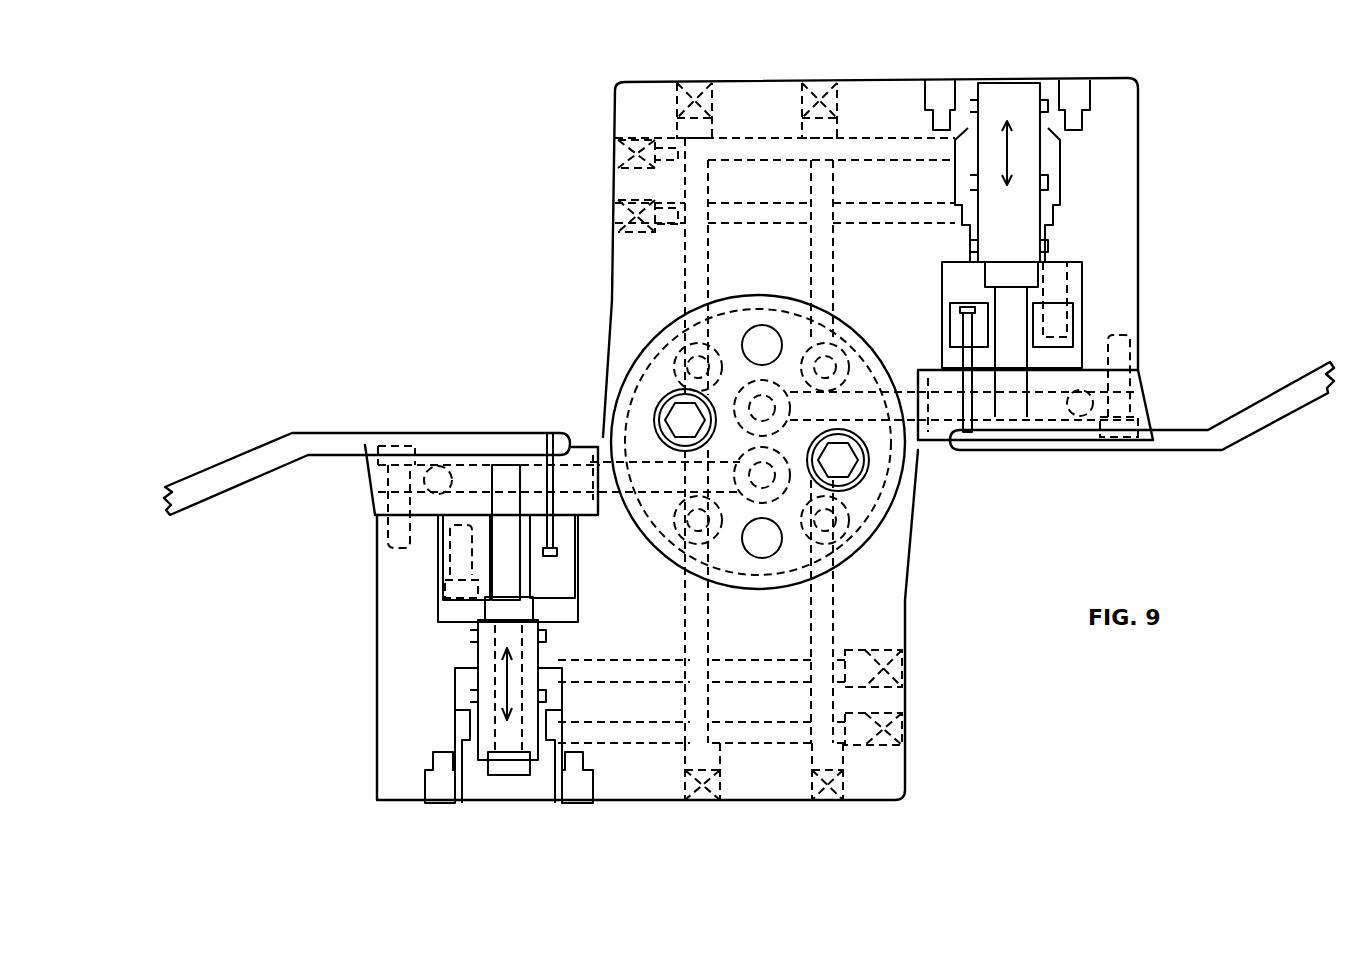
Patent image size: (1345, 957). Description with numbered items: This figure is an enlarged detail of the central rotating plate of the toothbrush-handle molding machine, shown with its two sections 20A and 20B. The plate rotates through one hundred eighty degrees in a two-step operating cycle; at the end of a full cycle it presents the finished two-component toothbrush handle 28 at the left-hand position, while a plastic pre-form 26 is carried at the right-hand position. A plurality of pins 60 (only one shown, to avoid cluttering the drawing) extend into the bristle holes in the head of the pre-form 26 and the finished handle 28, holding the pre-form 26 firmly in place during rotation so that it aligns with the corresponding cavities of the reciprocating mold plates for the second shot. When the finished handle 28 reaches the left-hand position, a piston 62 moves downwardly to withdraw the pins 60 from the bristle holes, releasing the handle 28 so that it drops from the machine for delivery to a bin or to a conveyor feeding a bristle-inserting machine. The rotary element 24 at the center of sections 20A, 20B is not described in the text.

The plate section 20A is at (392, 687).
The plate section 20B is at (1118, 233).
The rotary disk 24 is at (803, 442).
The pre-form 26 is at (1168, 450).
The two-component toothbrush handle 28 is at (255, 478).
The pins 60 is at (972, 393).
The piston 62 is at (1010, 215).